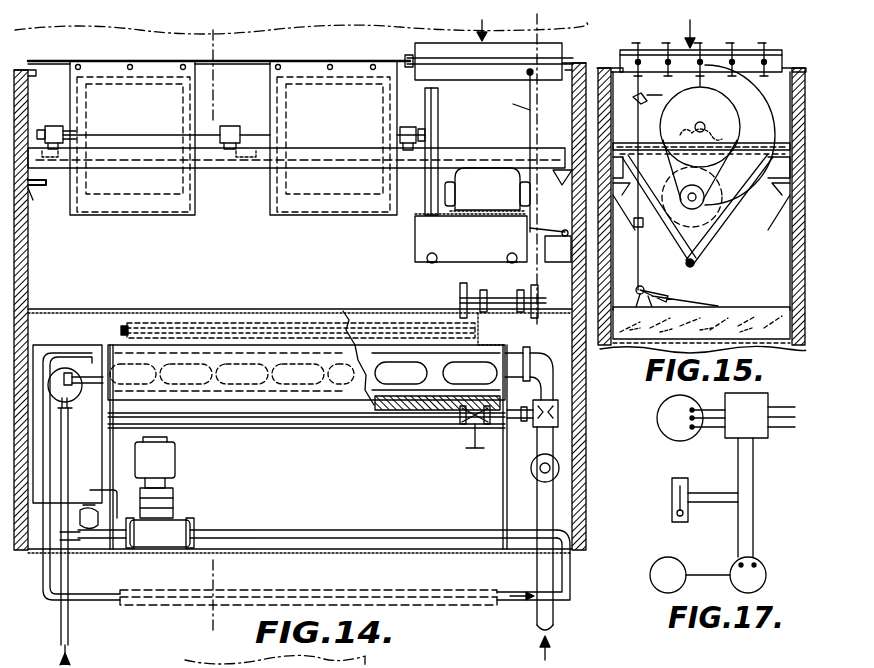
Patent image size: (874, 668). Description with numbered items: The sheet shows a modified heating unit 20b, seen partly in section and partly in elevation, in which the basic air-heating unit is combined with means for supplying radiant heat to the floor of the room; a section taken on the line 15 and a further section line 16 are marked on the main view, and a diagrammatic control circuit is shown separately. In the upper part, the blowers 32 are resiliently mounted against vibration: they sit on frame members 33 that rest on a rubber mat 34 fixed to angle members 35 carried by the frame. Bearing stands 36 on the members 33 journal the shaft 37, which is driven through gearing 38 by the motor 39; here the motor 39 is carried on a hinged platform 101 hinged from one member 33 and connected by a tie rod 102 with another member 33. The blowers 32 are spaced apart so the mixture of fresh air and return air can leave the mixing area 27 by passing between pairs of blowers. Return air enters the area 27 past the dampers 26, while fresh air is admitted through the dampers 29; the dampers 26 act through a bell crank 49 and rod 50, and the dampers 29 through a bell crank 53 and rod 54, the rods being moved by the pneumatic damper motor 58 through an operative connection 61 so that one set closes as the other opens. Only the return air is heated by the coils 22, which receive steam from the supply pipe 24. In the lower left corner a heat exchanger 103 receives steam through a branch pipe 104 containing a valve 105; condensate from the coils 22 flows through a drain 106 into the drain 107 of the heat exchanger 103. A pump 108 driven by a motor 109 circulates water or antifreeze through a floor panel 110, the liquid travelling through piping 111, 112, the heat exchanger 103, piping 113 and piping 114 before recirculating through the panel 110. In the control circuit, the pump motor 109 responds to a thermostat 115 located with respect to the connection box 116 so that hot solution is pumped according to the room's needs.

In FIG. 14, the section line 15— 15 is at (537, 25).
In FIG. 14, the section line 16— 16 is at (213, 38).
In FIG. 14, the unit 20b is at (586, 399).
In FIG. 14, the heating coils 22 is at (414, 376).
In FIG. 14, the supply pipe 24 is at (540, 512).
In FIG. 14, the dampers 26 is at (403, 306).
In FIG. 15, the dampers 26 is at (782, 290).
In FIG. 14, the mixing area 27 is at (253, 268).
In FIG. 14, the fresh air dampers 29 is at (528, 78).
In FIG. 15, the fresh air dampers 29 is at (659, 34).
In FIG. 14, the blowers 32 is at (142, 218).
In FIG. 14, the frame members 33 is at (258, 172).
In FIG. 15, the frame members 33 is at (783, 142).
In FIG. 14, the rubber mat 34 is at (44, 185).
In FIG. 15, the rubber mat 34 is at (776, 203).
In FIG. 14, the angle members 35 is at (32, 190).
In FIG. 15, the angle members 35 is at (787, 200).
In FIG. 14, the bearing stands 36 is at (62, 126).
In FIG. 14, the shaft 37 is at (258, 126).
In FIG. 14, the gearing 38 is at (442, 103).
In FIG. 14, the motor 39 is at (487, 189).
In FIG. 17, the motor 39 is at (683, 442).
In FIG. 15, the bell crank 49 is at (644, 289).
In FIG. 14, the rod 50 is at (534, 270).
In FIG. 15, the rod 50 is at (642, 233).
In FIG. 15, the bell crank 53 is at (662, 95).
In FIG. 14, the rod 54 is at (528, 126).
In FIG. 14, the pneumatic damper motor 58 is at (531, 300).
In FIG. 14, the operative connection 61 is at (552, 236).
In FIG. 15, the hinged platform 101 is at (697, 266).
In FIG. 15, the tie rod 102 is at (722, 236).
In FIG. 14, the heat exchanger 103 is at (93, 342).
In FIG. 14, the branch pipe 104 is at (403, 428).
In FIG. 14, the valve 105 is at (471, 448).
In FIG. 14, the drain 106 is at (75, 370).
In FIG. 14, the drain 107 is at (72, 576).
In FIG. 14, the pump 108 is at (172, 522).
In FIG. 17, the pump 108 is at (666, 557).
In FIG. 14, the motor 109 is at (176, 468).
In FIG. 17, the motor 109 is at (790, 547).
In FIG. 14, the floor panel 110 is at (426, 588).
In FIG. 14, the piping 111 is at (452, 528).
In FIG. 14, the piping 112 is at (155, 457).
In FIG. 14, the piping 113 is at (45, 588).
In FIG. 14, the piping 114 is at (113, 603).
In FIG. 17, the thermostat 115 is at (673, 480).
In FIG. 17, the connection box 116 is at (758, 440).